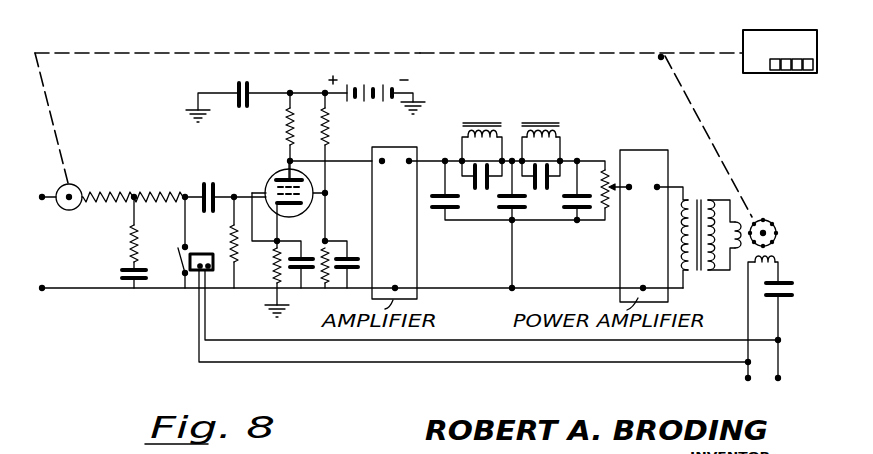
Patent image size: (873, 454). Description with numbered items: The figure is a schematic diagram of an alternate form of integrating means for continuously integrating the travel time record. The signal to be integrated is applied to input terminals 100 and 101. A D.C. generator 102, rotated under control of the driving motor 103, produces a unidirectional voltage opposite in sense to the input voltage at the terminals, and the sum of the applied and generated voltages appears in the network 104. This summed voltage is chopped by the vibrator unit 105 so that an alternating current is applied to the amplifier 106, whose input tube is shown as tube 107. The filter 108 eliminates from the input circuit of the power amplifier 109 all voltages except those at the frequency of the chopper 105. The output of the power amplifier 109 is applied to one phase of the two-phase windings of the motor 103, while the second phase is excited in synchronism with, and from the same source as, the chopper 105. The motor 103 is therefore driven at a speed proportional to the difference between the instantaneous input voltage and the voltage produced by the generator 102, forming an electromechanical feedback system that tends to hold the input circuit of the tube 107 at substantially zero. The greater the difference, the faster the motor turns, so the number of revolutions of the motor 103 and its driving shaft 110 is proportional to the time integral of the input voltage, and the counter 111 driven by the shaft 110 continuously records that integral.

The input terminal 100 is at (44, 202).
The input terminal 101 is at (44, 292).
The D.C. generator 102 is at (68, 184).
The driving motor 103 is at (774, 222).
The network 104 is at (165, 192).
The vibrator unit 105 is at (175, 264).
The amplifier 106 is at (418, 53).
The tube 107 is at (270, 175).
The filter 108 is at (560, 135).
The power amplifier 109 is at (657, 239).
The driving shaft 110 is at (556, 54).
The counter 111 is at (745, 34).